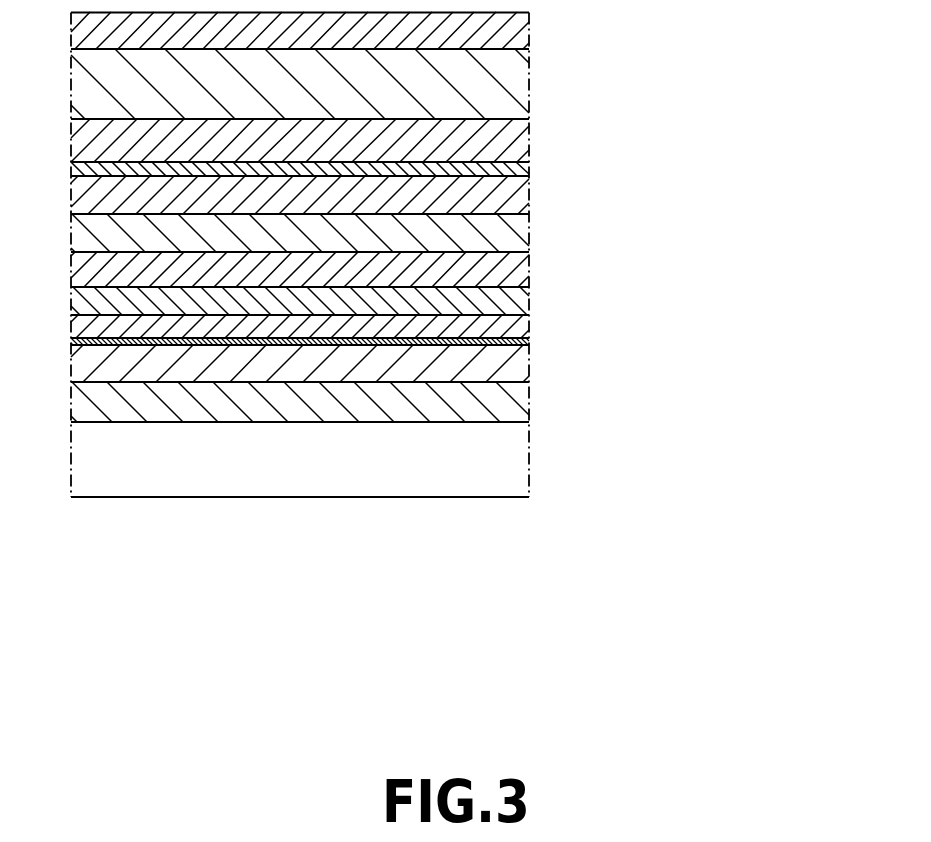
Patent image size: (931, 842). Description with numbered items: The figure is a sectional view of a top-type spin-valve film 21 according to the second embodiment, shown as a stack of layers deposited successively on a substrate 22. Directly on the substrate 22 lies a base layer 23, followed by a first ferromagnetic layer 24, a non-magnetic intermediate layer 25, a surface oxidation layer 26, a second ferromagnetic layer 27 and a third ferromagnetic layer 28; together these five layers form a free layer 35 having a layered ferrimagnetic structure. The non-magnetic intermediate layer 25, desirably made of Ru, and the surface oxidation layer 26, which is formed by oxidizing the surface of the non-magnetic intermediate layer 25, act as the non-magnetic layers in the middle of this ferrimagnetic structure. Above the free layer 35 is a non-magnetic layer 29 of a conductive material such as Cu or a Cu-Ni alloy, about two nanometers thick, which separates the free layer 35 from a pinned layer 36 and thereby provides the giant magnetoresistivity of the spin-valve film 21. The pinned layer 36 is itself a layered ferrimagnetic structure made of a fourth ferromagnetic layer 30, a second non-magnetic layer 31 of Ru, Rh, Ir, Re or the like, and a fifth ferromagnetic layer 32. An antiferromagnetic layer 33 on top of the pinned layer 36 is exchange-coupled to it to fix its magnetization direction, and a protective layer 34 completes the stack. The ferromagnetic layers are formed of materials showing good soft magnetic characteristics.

The spin-valve film 21 is at (764, 144).
The substrate 22 is at (518, 465).
The base layer 23 is at (518, 403).
The first ferromagnetic layer 24 is at (518, 365).
The non-magnetic intermediate layer 25 is at (520, 343).
The surface oxidation layer 26 is at (517, 330).
The second ferromagnetic layer 27 is at (517, 302).
The third ferromagnetic layer 28 is at (518, 268).
The non-magnetic layer 29 is at (517, 230).
The fourth ferromagnetic layer 30 is at (528, 195).
The second non-magnetic layer 31 is at (528, 165).
The fifth ferromagnetic layer 32 is at (517, 132).
The antiferromagnetic layer 33 is at (508, 73).
The protective layer 34 is at (512, 37).
The free layer 35 is at (643, 227).
The pinned layer 36 is at (642, 73).